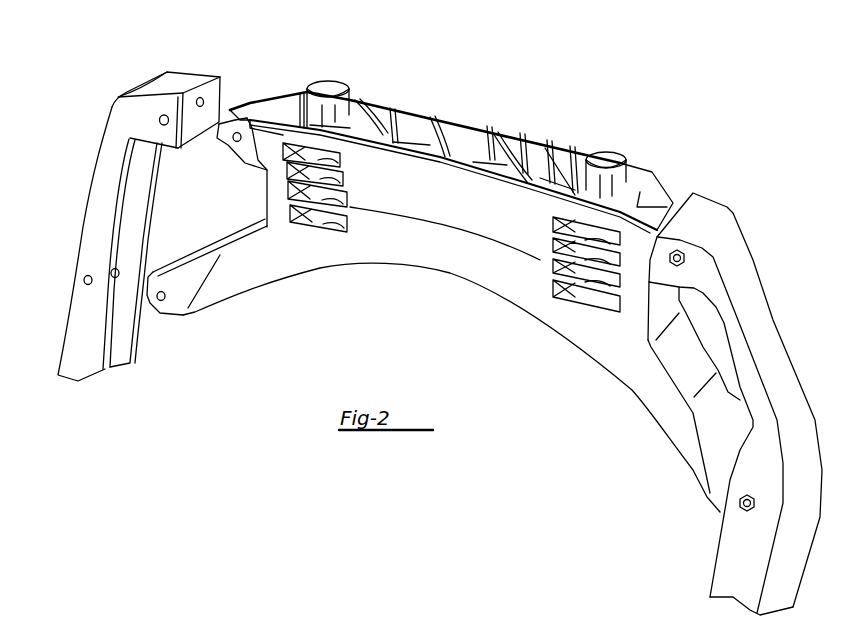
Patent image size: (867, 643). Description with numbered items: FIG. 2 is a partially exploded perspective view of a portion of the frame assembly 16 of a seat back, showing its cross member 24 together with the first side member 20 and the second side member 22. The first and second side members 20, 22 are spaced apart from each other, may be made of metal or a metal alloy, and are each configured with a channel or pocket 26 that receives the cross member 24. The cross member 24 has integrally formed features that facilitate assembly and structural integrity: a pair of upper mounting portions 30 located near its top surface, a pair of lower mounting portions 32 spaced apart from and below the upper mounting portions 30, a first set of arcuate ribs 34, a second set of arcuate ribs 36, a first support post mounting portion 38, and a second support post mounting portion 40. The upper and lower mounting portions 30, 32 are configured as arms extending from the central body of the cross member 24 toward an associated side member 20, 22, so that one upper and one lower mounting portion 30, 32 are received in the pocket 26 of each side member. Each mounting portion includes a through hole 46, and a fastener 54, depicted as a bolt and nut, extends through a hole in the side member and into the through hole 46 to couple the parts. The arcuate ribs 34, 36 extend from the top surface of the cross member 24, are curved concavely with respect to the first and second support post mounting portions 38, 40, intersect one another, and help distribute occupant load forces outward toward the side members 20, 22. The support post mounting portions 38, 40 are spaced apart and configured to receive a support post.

The frame assembly 16 is at (508, 71).
The first side member 20 is at (108, 132).
The second side member 22 is at (750, 290).
The cross member 24 is at (461, 206).
The pocket 26 is at (189, 130).
The upper mounting portion 30 is at (272, 95).
The lower mounting portion 32 is at (183, 314).
The first set of arcuate ribs 34 is at (405, 138).
The second set of arcuate ribs 36 is at (383, 128).
The first support post mounting portion 38 is at (339, 74).
The second support post mounting portion 40 is at (614, 143).
The through hole 46 is at (232, 141).
The fastener 54 is at (668, 261).